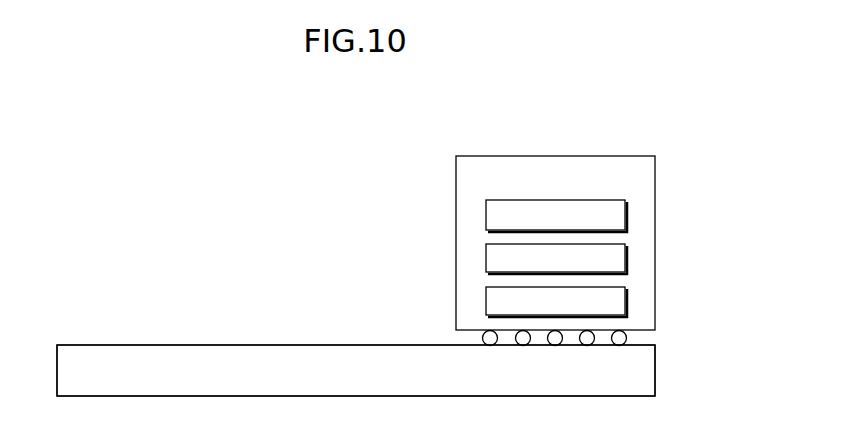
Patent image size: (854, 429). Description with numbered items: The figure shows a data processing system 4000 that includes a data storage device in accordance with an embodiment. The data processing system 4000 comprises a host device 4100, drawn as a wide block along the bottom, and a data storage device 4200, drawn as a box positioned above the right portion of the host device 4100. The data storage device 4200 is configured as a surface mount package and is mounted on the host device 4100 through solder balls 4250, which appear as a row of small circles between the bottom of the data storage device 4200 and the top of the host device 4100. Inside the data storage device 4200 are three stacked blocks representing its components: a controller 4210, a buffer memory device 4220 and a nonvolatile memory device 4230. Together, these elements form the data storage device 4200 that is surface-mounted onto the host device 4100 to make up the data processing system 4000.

The data processing system 4000 is at (137, 128).
The host device 4100 is at (356, 370).
The data storage device 4200 is at (555, 243).
The controller 4210 is at (556, 216).
The buffer memory device 4220 is at (556, 259).
The nonvolatile memory device 4230 is at (556, 302).
The solder balls 4250 is at (635, 338).